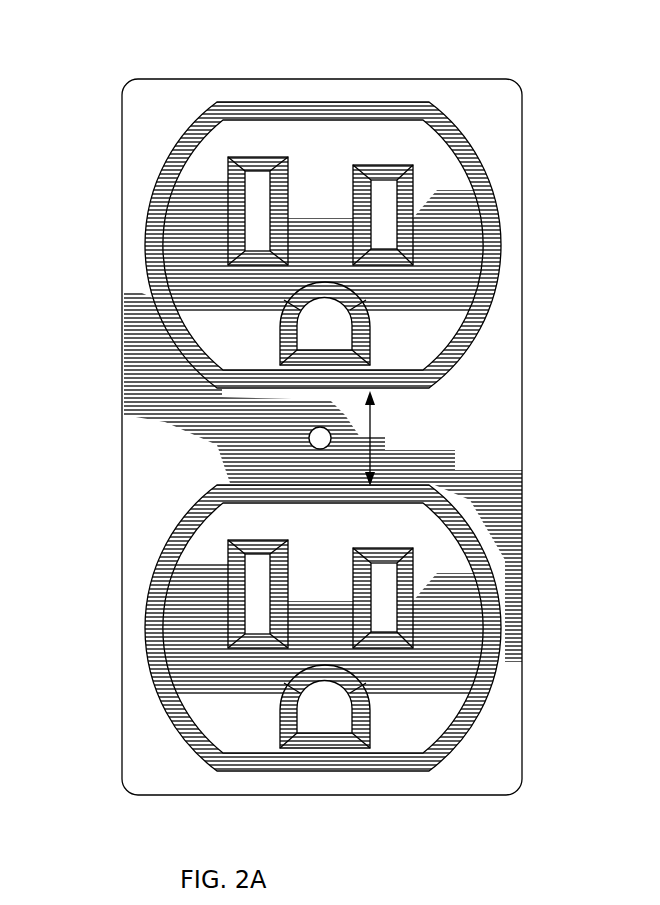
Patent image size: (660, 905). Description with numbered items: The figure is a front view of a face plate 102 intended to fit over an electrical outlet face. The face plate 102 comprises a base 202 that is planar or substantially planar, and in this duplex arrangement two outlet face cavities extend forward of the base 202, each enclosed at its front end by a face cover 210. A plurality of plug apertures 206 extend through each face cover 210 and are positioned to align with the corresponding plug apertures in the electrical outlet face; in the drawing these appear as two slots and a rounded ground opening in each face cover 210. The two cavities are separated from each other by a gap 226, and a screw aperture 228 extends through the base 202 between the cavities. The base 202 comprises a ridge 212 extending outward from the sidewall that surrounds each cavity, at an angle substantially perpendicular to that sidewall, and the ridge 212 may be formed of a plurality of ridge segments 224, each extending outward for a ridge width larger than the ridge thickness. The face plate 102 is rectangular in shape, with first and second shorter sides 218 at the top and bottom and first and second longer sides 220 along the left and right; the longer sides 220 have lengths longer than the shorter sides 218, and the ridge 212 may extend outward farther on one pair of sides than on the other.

The face plate 102 is at (92, 92).
The base 202 is at (333, 212).
The plug apertures 206 is at (268, 236).
The face cover 210 is at (445, 180).
The ridge 212 is at (236, 93).
The shorter sides 218 is at (394, 93).
The longer sides 220 is at (135, 450).
The ridge segments 224 is at (312, 95).
The gap 226 is at (372, 422).
The screw aperture 228 is at (308, 440).